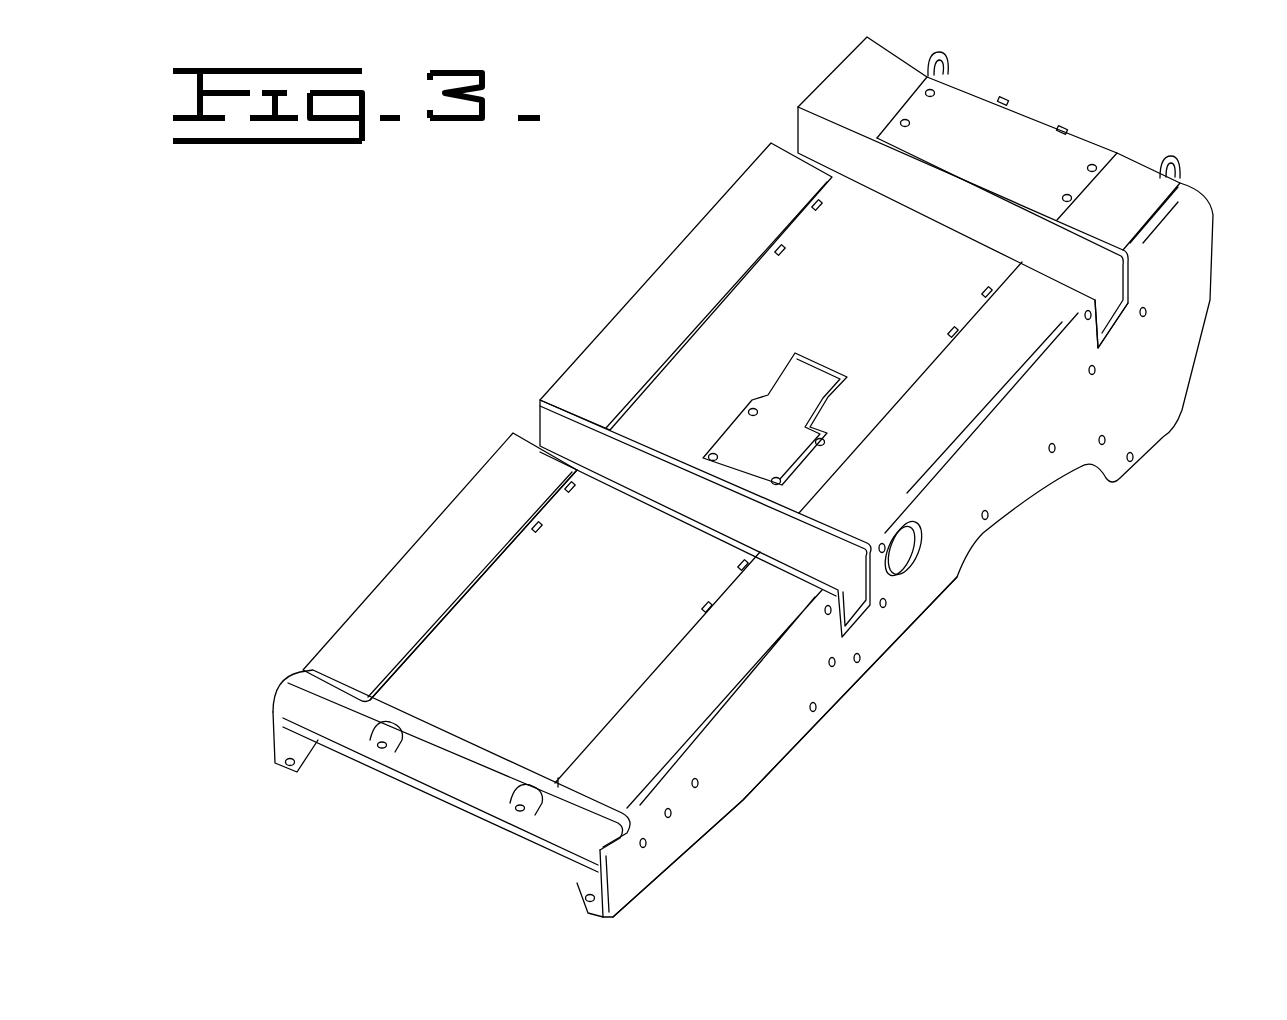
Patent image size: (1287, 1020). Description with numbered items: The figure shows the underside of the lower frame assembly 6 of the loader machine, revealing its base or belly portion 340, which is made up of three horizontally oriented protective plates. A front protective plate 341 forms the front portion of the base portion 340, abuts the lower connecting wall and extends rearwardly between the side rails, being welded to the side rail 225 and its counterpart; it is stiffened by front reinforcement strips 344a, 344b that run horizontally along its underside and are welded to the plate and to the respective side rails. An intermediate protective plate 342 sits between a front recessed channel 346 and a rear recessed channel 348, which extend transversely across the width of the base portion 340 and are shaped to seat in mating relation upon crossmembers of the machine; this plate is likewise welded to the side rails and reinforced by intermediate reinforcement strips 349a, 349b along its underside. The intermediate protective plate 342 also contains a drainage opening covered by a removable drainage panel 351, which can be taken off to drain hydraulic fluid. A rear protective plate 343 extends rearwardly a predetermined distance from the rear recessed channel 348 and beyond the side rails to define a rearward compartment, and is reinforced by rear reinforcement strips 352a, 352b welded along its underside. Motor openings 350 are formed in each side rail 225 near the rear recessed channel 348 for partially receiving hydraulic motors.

The lower frame assembly 6 is at (1153, 507).
The side rail 225 is at (787, 742).
The base portion 340 is at (563, 292).
The front protective plate 341 is at (1020, 160).
The intermediate protective plate 342 is at (875, 310).
The rear protective plate 343 is at (590, 650).
The front reinforcement strip 344a is at (893, 102).
The front reinforcement strip 344b is at (1150, 215).
The front recessed channel 346 is at (1107, 322).
The rear recessed channel 348 is at (847, 614).
The intermediate reinforcement strip 349a is at (720, 297).
The intermediate reinforcement strip 349b is at (975, 415).
The motor opening 350 is at (905, 558).
The drainage panel 351 is at (800, 453).
The rear reinforcement strip 352a is at (485, 567).
The rear reinforcement strip 352b is at (735, 682).